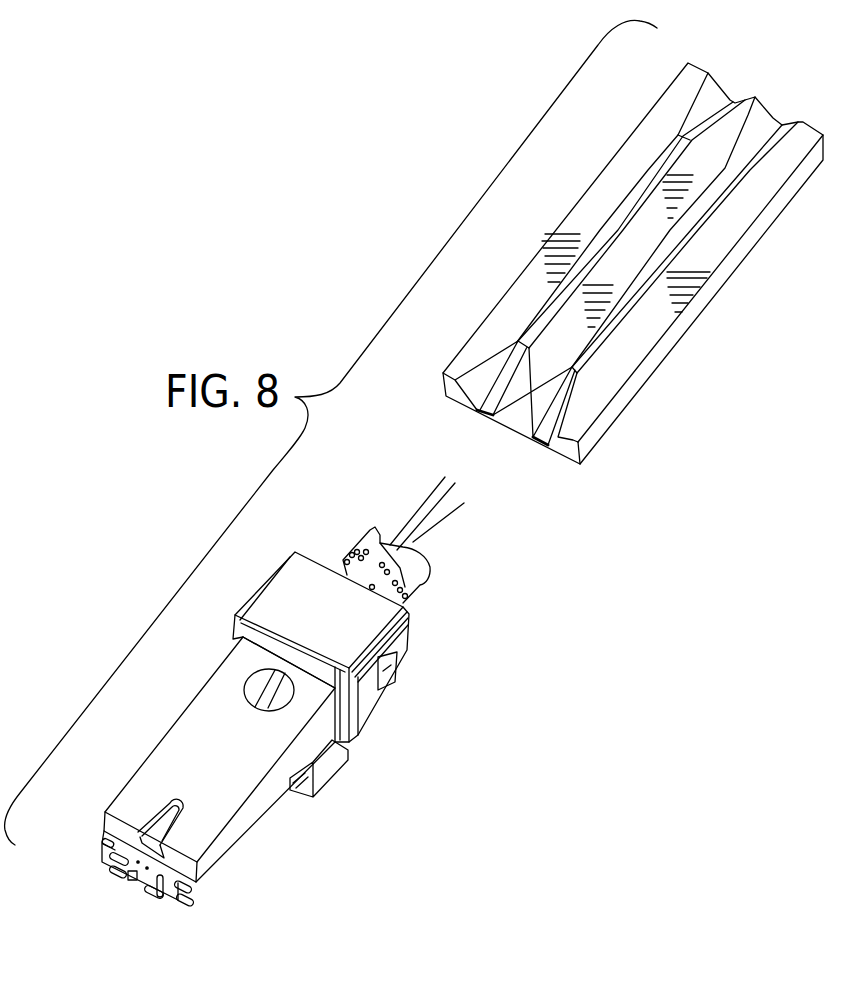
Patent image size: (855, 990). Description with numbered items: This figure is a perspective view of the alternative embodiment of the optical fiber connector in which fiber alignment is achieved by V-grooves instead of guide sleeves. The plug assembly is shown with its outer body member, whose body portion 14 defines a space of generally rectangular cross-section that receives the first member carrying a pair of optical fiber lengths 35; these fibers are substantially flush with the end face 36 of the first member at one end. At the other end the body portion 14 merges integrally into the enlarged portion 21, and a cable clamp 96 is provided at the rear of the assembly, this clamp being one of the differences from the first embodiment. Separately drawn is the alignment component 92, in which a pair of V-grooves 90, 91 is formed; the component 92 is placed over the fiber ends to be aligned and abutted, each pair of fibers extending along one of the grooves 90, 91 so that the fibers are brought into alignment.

The body portion 14 is at (258, 806).
The enlarged portion 21 is at (410, 650).
The optical fiber lengths 35 is at (147, 885).
The end face 36 is at (100, 859).
The V-groove 90 is at (607, 222).
The V-groove 91 is at (664, 262).
The component 92 is at (603, 428).
The cable clamp 96 is at (417, 568).